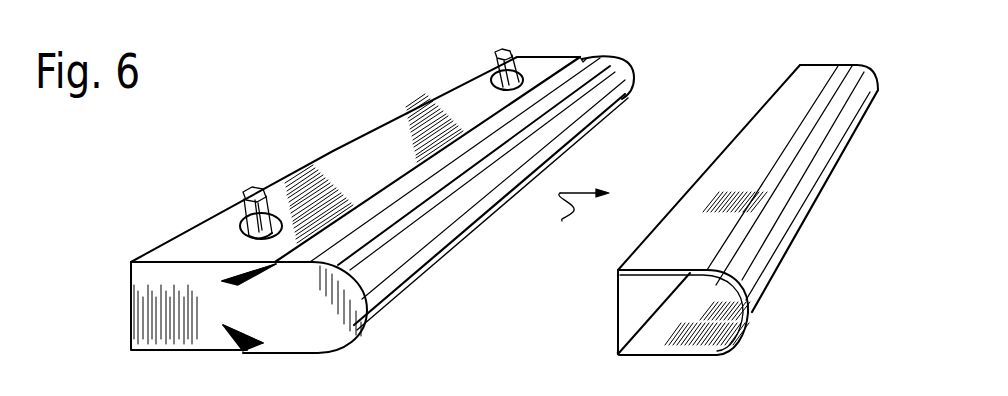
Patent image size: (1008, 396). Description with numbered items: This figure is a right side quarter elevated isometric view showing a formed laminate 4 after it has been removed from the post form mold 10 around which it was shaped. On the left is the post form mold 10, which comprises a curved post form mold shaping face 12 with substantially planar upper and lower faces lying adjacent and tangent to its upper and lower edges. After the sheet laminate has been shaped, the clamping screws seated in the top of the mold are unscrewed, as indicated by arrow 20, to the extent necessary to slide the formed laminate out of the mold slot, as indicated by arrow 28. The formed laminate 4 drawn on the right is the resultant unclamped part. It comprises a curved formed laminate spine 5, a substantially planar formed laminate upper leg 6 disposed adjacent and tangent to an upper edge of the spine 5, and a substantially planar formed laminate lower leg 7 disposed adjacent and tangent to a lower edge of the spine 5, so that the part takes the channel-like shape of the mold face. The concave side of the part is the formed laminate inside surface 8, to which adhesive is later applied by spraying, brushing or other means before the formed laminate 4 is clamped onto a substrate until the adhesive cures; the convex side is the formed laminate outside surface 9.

The formed laminate 4 is at (723, 177).
The formed laminate spine 5 is at (807, 178).
The formed laminate upper leg 6 is at (818, 65).
The formed laminate lower leg 7 is at (627, 338).
The formed laminate inside surface 8 is at (660, 323).
The formed laminate outside surface 9 is at (785, 118).
The post form mold 10 is at (95, 142).
The post form mold shaping face 12 is at (390, 265).
The arrow indicating unscrewing of clamping screws 20 is at (262, 166).
The arrow indicating removal of formed laminate 28 is at (577, 219).